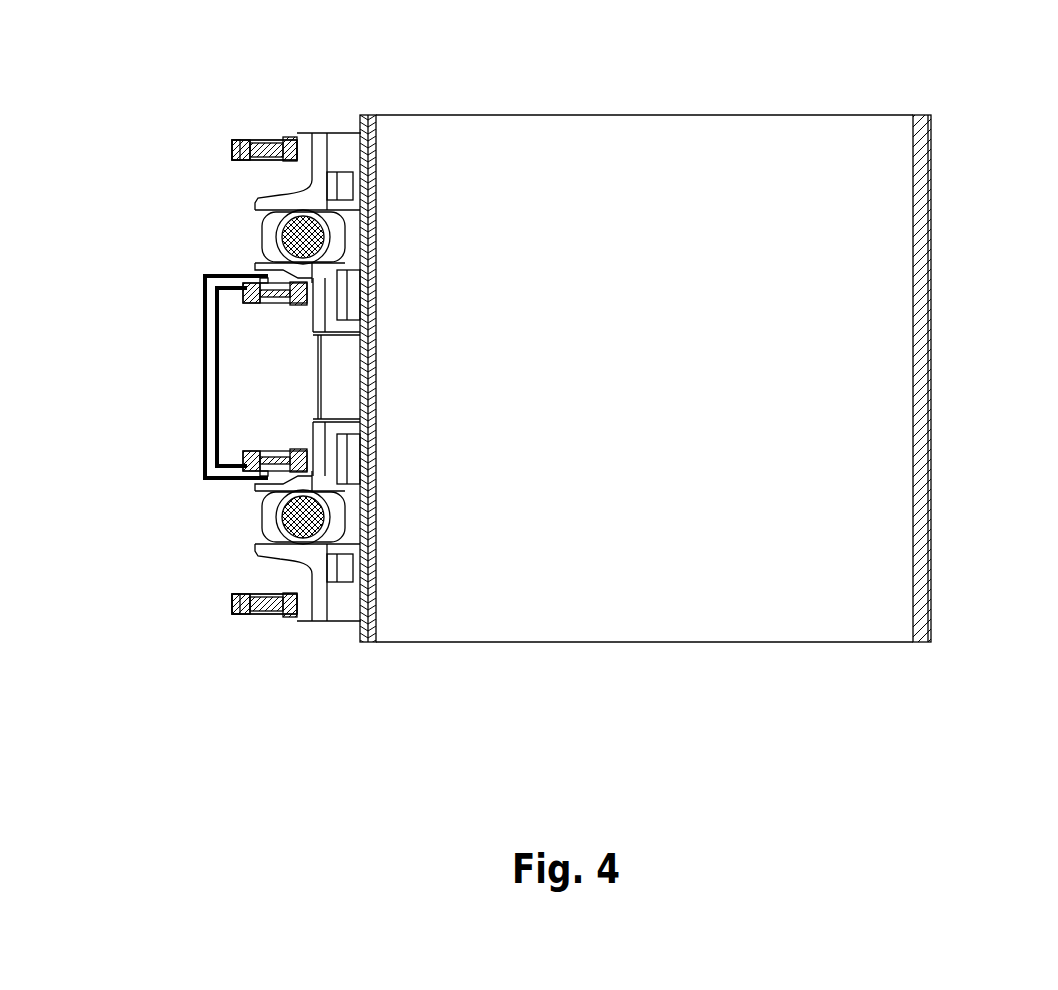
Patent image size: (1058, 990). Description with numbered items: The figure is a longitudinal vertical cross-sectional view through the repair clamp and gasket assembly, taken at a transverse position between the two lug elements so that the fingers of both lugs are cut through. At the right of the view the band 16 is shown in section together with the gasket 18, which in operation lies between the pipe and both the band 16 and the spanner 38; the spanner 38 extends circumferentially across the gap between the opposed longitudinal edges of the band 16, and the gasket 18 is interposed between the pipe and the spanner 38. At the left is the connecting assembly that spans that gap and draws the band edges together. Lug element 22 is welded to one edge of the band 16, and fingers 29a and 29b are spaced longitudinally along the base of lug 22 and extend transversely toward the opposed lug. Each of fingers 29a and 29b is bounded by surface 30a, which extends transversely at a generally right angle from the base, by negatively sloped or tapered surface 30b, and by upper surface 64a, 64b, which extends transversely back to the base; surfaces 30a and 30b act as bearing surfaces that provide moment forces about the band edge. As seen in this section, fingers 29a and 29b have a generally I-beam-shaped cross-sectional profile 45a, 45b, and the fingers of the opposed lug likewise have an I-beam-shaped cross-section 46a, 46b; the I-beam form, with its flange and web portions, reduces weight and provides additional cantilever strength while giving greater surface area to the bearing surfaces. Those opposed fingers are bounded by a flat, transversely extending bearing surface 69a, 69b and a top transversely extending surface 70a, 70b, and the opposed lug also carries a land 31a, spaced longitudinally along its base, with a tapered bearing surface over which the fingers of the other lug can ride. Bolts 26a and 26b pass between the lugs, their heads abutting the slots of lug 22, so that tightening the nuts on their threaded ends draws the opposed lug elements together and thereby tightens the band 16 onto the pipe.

The band 16 is at (904, 602).
The gasket 18 is at (391, 635).
The lug element 22 is at (345, 667).
The bolt 26a is at (287, 519).
The bolt 26b is at (287, 244).
The finger 29a is at (209, 606).
The finger 29b is at (195, 148).
The surface 30a is at (355, 635).
The negatively sloped or tapered surface 30b is at (312, 162).
The land 31a is at (335, 700).
The spanner 38 is at (381, 388).
The I-beam-shaped cross-sectional profile 45a is at (226, 673).
The I-beam-shaped cross-sectional profile 45b is at (288, 87).
The I-beam-shaped cross-section 46a is at (207, 435).
The I-beam-shaped cross-section 46b is at (207, 326).
The upper surface 64a is at (176, 590).
The upper surface 64b is at (189, 132).
The bearing surface 69a is at (320, 470).
The bearing surface 69b is at (320, 293).
The top surface 70a is at (230, 455).
The top surface 70b is at (191, 326).